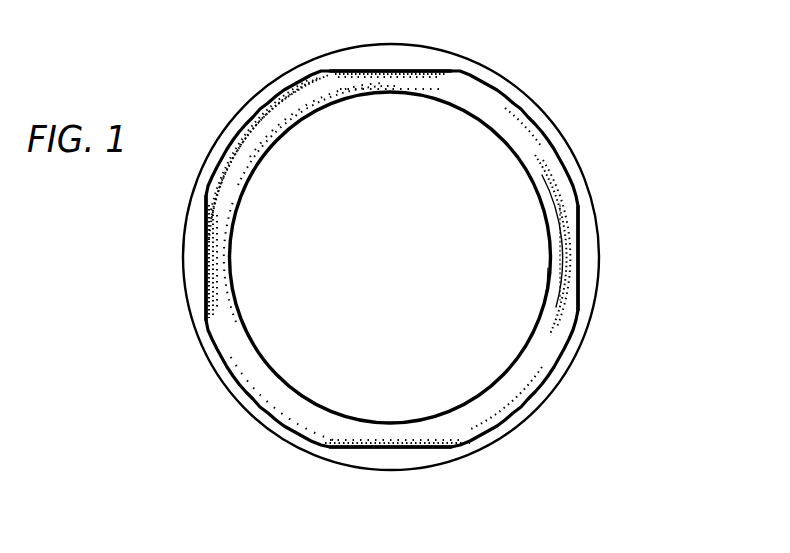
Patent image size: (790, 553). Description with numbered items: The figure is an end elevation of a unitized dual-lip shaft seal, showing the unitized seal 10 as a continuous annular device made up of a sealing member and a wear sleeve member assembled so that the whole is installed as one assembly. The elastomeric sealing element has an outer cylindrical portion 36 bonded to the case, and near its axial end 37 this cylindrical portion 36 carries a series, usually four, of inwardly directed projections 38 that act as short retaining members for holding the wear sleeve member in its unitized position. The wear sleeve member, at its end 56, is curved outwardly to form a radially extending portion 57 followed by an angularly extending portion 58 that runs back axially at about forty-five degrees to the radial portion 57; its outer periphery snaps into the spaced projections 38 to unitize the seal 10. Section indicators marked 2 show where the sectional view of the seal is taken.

The unitized seal 10 is at (562, 120).
The axial end 37 is at (497, 78).
The inwardly directed projections 38 is at (412, 57).
The outer cylindrical portion 36 is at (560, 172).
The radially extending portion 57 is at (552, 190).
The angularly extending portion 58 is at (575, 241).
The end of wear sleeve member 56 is at (552, 273).
The section line 2- 2 is at (258, 277).